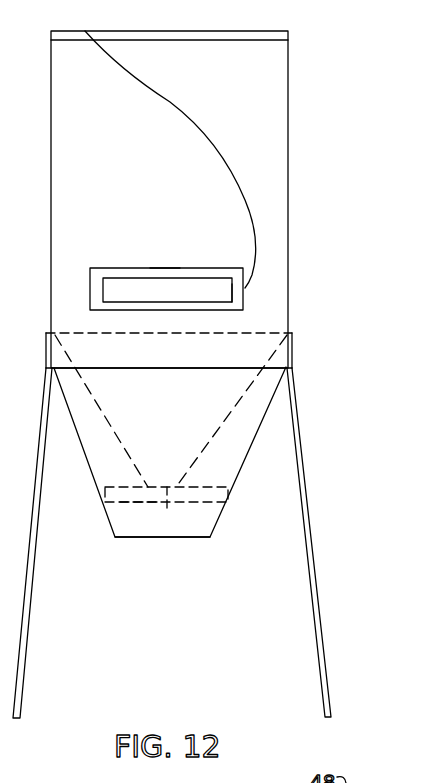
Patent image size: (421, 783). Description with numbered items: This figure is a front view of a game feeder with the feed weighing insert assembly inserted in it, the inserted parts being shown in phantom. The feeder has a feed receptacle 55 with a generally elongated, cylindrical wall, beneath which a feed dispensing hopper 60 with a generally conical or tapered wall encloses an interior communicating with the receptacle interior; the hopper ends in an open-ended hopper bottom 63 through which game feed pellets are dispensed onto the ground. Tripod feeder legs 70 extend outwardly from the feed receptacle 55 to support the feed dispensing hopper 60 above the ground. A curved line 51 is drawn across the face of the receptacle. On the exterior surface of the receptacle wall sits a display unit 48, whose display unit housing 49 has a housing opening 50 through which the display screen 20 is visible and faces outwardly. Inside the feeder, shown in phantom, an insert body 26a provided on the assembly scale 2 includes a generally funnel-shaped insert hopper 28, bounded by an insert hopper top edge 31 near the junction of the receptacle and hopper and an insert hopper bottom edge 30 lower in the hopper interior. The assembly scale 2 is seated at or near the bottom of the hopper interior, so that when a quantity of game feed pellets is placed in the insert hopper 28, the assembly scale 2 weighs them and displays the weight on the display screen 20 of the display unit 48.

The feed receptacle 55 is at (300, 226).
The curved fold line 51 is at (180, 84).
The display screen 20 is at (122, 292).
The display unit 48 is at (185, 220).
The display unit housing 49 is at (222, 270).
The housing opening 50 is at (232, 295).
The insert hopper top edge 31 is at (249, 333).
The insert body 26a is at (268, 385).
The insert hopper 28 is at (240, 422).
The feed dispensing hopper 60 is at (262, 465).
The insert hopper bottom edge 30 is at (176, 510).
The assembly scale 2 is at (141, 515).
The hopper bottom 63 is at (208, 537).
The tripod feeder legs 70 is at (315, 625).